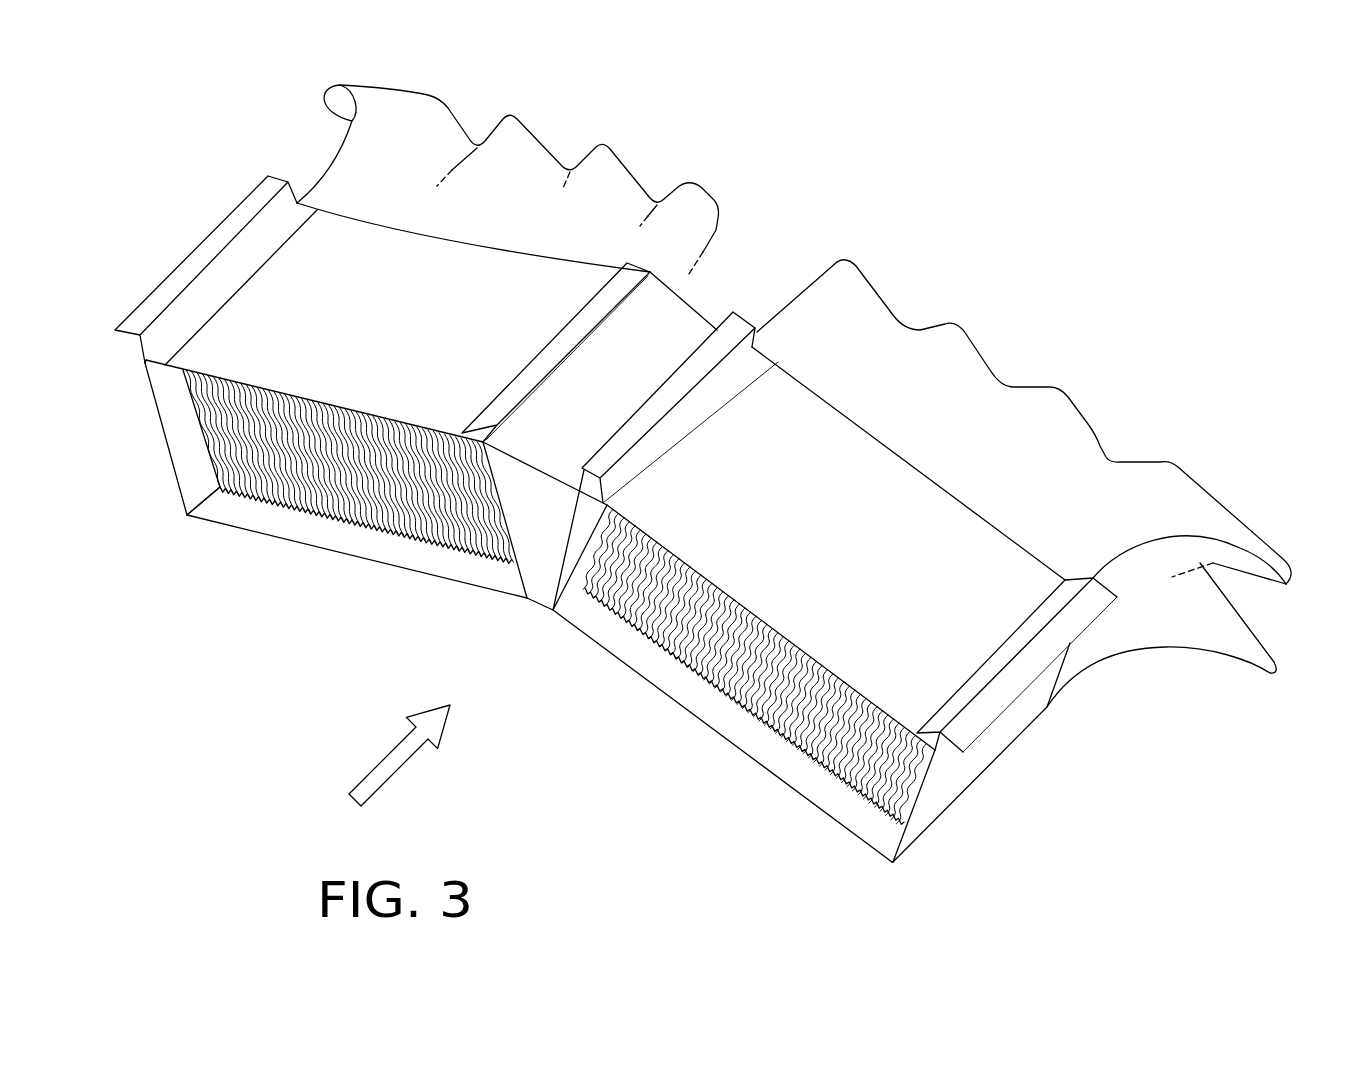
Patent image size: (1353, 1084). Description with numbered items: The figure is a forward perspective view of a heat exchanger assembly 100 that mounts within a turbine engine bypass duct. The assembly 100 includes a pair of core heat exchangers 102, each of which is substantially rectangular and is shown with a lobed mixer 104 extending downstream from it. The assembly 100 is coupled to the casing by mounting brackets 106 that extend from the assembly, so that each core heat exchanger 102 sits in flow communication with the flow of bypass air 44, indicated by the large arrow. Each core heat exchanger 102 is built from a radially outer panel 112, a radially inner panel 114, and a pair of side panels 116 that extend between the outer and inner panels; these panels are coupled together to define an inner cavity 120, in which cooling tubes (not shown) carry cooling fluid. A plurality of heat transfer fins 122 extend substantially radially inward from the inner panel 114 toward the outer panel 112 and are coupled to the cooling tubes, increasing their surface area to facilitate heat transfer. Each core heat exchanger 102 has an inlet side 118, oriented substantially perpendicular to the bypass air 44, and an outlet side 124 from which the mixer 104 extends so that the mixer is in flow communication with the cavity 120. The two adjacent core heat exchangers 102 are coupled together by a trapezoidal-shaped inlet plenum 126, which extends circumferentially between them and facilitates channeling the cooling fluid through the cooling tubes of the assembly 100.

The heat exchanger assembly 100 is at (910, 137).
The lobed mixer 104 is at (573, 140).
The outlet side 124 is at (438, 227).
The inlet plenum 126 is at (690, 307).
The core heat exchanger 102 is at (342, 300).
The radially outer panel 112 is at (408, 333).
The mounting bracket 106 is at (203, 253).
The side panel 116 is at (180, 440).
The inner cavity 120 is at (227, 493).
The radially inner panel 114 is at (357, 533).
The inlet side 118 is at (367, 580).
The heat transfer fin 122 is at (845, 788).
The bypass air 44 is at (357, 783).